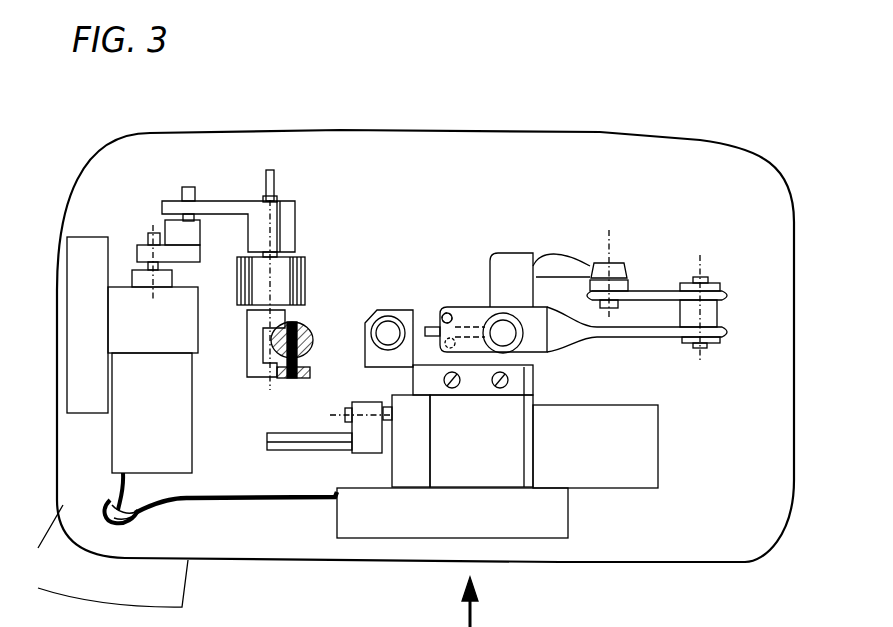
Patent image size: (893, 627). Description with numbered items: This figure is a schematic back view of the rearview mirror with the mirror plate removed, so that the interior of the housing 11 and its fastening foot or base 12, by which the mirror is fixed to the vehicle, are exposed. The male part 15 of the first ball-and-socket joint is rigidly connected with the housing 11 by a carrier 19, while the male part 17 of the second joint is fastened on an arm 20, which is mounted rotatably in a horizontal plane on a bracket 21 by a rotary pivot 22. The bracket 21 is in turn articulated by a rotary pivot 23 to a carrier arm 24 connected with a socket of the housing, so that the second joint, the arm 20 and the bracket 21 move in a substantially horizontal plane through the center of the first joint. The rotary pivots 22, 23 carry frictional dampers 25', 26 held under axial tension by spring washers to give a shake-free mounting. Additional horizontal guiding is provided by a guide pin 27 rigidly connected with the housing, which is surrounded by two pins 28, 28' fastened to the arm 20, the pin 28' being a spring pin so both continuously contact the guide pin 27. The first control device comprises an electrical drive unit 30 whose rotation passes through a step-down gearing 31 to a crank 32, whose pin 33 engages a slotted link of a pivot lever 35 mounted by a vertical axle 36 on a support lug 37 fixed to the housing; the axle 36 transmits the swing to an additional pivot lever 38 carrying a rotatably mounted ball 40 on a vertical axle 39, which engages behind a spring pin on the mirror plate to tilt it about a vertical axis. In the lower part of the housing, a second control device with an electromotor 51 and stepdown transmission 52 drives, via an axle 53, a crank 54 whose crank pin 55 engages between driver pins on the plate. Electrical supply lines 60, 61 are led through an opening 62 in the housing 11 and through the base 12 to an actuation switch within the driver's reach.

The housing 11 is at (446, 219).
The fastening foot or base 12 is at (122, 593).
The male part 15 is at (385, 332).
The male part 17 is at (505, 335).
The carrier 19 is at (407, 378).
The arm 20 is at (637, 328).
The bracket 21 is at (657, 292).
The rotary pivot 22 is at (700, 278).
The rotary pivot 23 is at (608, 262).
The carrier arm 24 is at (523, 267).
The frictional damper 25' is at (736, 302).
The frictional damper 26 is at (632, 291).
The guide pin 27 is at (428, 327).
The pin 28 is at (423, 400).
The spring pin 28' is at (474, 275).
The first electrical drive unit 30 is at (172, 414).
The step-down gearing 31 is at (170, 337).
The crank 32 is at (180, 233).
The pin 33 is at (187, 187).
The pivot lever 35 is at (231, 201).
The vertical axle 36 is at (270, 170).
The support lug 37 is at (280, 270).
The additional pivot lever 38 is at (247, 362).
The vertical axle 39 is at (292, 322).
The ball 40 is at (298, 338).
The electromotor 51 is at (610, 464).
The stepdown transmission 52 is at (496, 461).
The axle 53 is at (345, 413).
The crank 54 is at (367, 430).
The crank pin 55 is at (300, 447).
The electrical supply line 60 is at (140, 508).
The electrical supply line 61 is at (293, 507).
The opening 62 is at (105, 495).